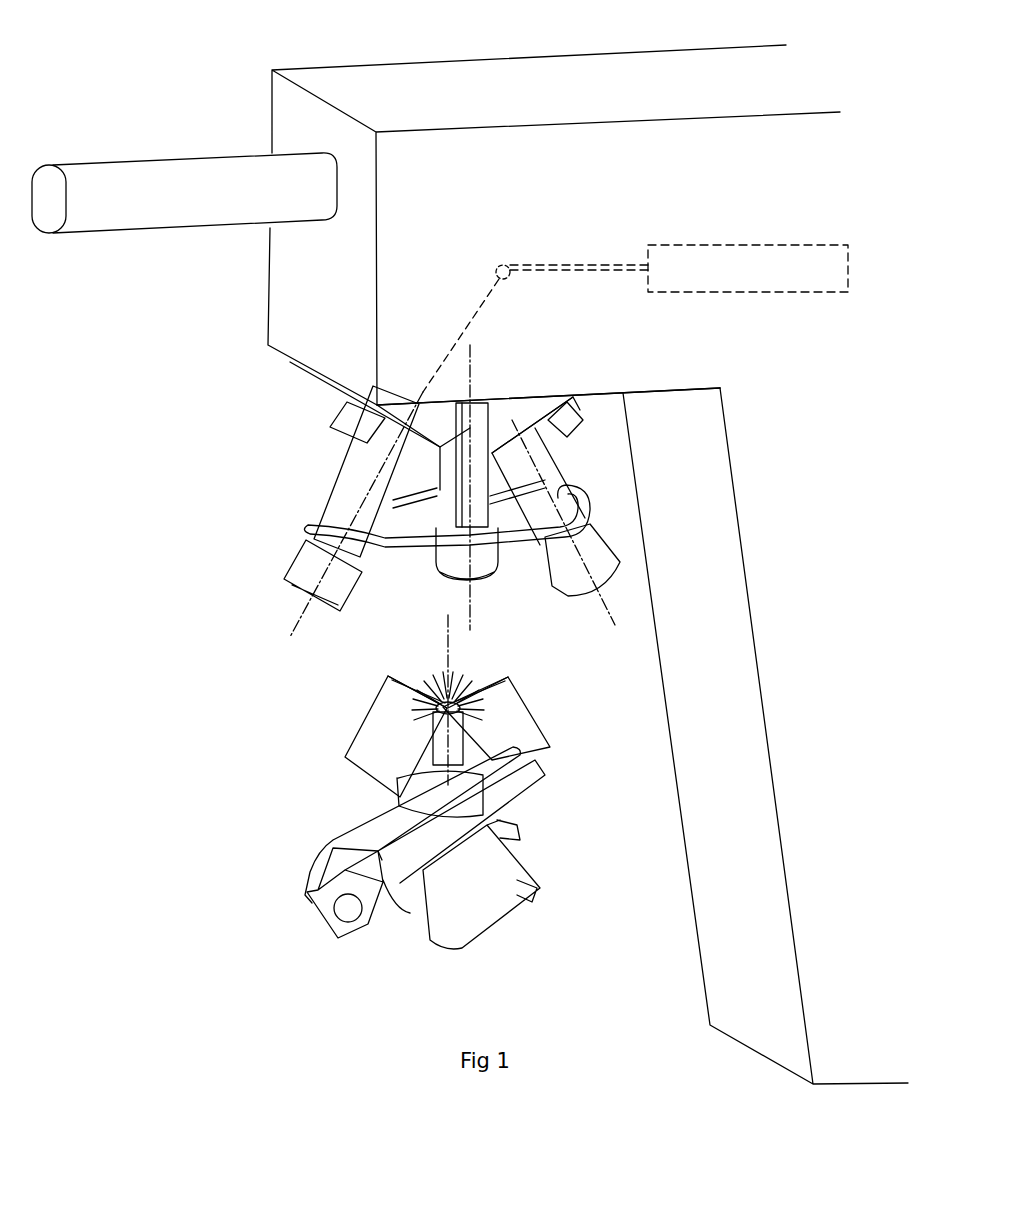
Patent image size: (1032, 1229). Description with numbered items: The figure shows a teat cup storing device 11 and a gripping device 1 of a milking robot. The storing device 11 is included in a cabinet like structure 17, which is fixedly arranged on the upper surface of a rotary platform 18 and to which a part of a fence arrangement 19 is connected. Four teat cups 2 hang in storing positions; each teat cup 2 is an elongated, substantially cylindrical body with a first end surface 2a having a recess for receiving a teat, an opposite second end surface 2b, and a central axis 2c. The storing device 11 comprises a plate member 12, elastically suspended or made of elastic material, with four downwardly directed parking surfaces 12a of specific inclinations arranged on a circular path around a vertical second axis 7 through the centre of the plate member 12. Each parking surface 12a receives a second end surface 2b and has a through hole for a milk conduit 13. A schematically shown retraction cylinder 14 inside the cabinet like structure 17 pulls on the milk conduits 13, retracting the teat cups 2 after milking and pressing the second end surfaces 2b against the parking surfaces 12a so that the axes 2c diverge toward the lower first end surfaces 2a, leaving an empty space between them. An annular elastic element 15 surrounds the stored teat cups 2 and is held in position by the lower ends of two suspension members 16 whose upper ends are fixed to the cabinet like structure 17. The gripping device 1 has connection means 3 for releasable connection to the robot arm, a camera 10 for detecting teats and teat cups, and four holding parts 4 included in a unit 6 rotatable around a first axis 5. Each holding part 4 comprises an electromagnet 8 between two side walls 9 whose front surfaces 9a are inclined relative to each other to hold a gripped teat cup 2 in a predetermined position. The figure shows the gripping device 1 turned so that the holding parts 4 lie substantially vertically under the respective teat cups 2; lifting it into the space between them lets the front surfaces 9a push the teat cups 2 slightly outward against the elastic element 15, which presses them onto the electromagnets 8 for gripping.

The gripping device 1 is at (580, 786).
The teat cup 2 is at (352, 500).
The first end surface 2a is at (300, 593).
The second end surface 2b is at (540, 427).
The axis 2c is at (298, 622).
The connection means 3 is at (340, 909).
The holding part 4 is at (397, 730).
The first axis 5 is at (447, 645).
The unit 6 is at (427, 778).
The second axis 7 is at (470, 594).
The electromagnet 8 is at (487, 680).
The side wall 9 is at (505, 715).
The front surface 9a is at (425, 693).
The camera 10 is at (487, 907).
The storing device 11 is at (222, 316).
The plate member 12 is at (532, 385).
The parking surface 12a is at (372, 386).
The milk conduit 13 is at (424, 392).
The retraction cylinder 14 is at (722, 267).
The annular elastic element 15 is at (320, 530).
The suspension member 16 is at (476, 405).
The cabinet like structure 17 is at (448, 95).
The rotary platform 18 is at (643, 1078).
The fence arrangement 19 is at (230, 185).